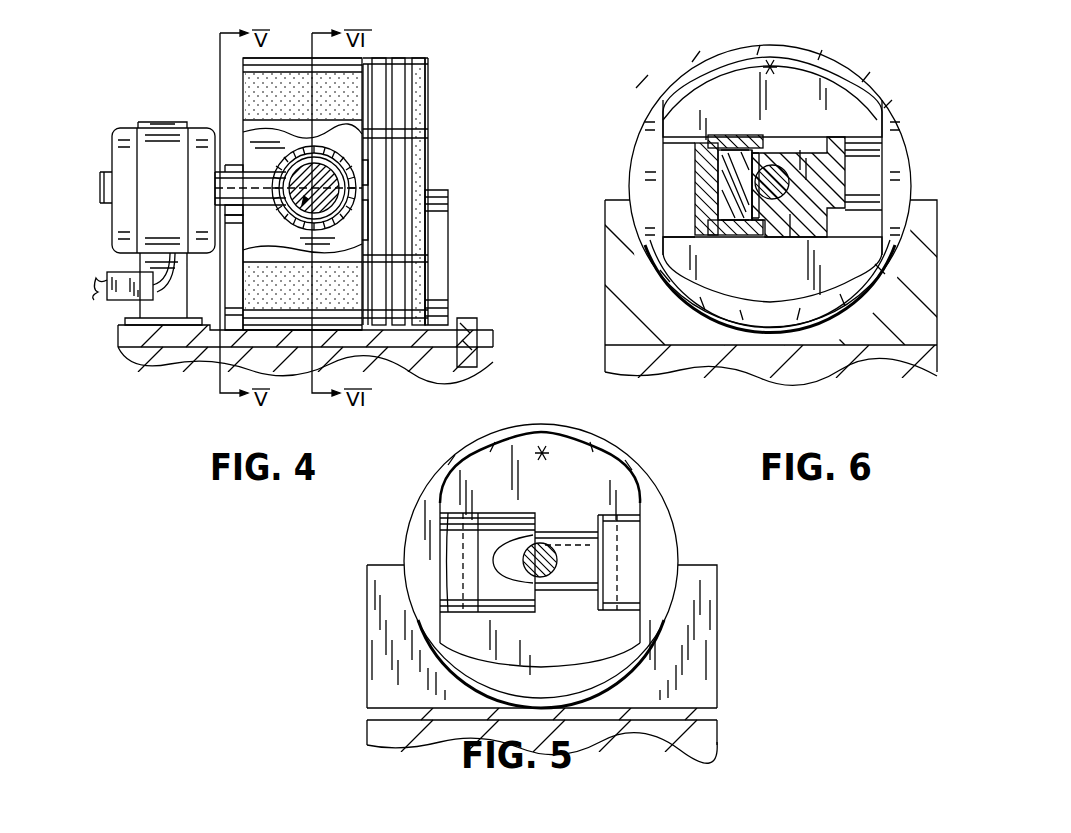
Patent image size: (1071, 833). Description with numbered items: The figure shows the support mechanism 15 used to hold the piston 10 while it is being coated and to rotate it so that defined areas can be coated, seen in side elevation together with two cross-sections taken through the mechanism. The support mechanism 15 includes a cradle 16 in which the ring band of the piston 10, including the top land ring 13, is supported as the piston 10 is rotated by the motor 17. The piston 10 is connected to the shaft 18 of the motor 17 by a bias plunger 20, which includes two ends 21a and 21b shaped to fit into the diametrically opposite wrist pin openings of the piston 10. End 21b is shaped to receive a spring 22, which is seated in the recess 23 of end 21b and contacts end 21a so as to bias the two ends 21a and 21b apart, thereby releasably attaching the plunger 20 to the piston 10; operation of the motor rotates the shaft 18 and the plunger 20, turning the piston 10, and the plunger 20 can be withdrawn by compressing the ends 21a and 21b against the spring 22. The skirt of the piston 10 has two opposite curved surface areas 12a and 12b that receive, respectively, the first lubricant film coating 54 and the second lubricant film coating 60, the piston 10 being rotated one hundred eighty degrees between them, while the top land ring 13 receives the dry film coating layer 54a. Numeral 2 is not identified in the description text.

In FIG. 4, the controller 2 is at (121, 286).
In FIG. 6, the piston 10 is at (911, 83).
In FIG. 5, the piston 10 is at (689, 514).
In FIG. 4, the curved surface area of piston skirt 12a is at (295, 65).
In FIG. 6, the curved surface area of piston skirt 12a is at (680, 80).
In FIG. 5, the curved surface area of piston skirt 12a is at (480, 438).
In FIG. 4, the curved surface area of piston skirt 12b is at (276, 325).
In FIG. 6, the curved surface area of piston skirt 12b is at (850, 293).
In FIG. 5, the curved surface area of piston skirt 12b is at (628, 668).
In FIG. 4, the top land ring 13 is at (418, 58).
In FIG. 6, the top land ring 13 is at (660, 90).
In FIG. 5, the top land ring 13 is at (432, 480).
In FIG. 4, the support mechanism 15 is at (442, 155).
In FIG. 6, the support mechanism 15 is at (937, 344).
In FIG. 5, the support mechanism 15 is at (717, 600).
In FIG. 4, the cradle 16 is at (440, 262).
In FIG. 6, the cradle 16 is at (928, 276).
In FIG. 5, the cradle 16 is at (705, 620).
In FIG. 4, the motor 17 is at (128, 135).
In FIG. 4, the shaft 18 is at (237, 175).
In FIG. 6, the shaft 18 is at (770, 170).
In FIG. 5, the shaft 18 is at (542, 548).
In FIG. 4, the bias plunger 20 is at (300, 210).
In FIG. 6, the bias plunger 20 is at (800, 152).
In FIG. 5, the bias plunger 20 is at (578, 530).
In FIG. 6, the end of bias plunger 21a is at (850, 192).
In FIG. 5, the end of bias plunger 21a is at (600, 608).
In FIG. 6, the end of bias plunger 21b is at (700, 190).
In FIG. 5, the end of bias plunger 21b is at (524, 606).
In FIG. 6, the spring 22 is at (714, 225).
In FIG. 6, the recess 23 is at (760, 225).
In FIG. 4, the first lubricant film coating 54 is at (284, 108).
In FIG. 4, the coating layer 54a is at (420, 92).
In FIG. 4, the second lubricant film coating 60 is at (255, 276).